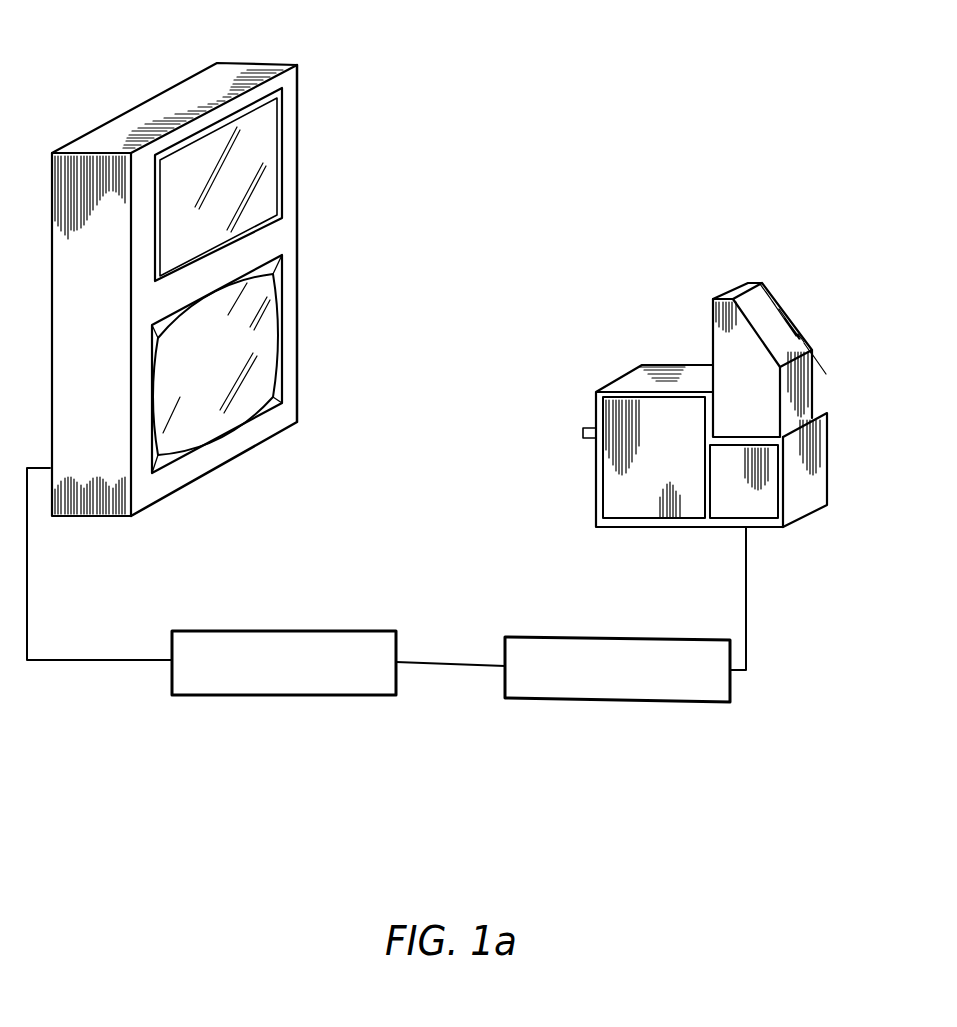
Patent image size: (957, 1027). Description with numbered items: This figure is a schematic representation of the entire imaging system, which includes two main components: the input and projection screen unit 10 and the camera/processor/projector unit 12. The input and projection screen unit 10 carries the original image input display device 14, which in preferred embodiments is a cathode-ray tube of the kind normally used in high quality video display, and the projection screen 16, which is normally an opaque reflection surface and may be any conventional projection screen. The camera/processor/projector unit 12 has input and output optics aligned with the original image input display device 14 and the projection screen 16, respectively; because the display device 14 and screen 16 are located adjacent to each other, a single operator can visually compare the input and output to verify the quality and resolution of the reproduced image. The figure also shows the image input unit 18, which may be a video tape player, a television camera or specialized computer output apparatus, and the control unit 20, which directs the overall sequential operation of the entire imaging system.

The input and projection screen unit 10 is at (353, 61).
The camera/processor/projector unit 12 is at (722, 267).
The original image input display device 14 is at (260, 352).
The projection screen 16 is at (260, 183).
The image input unit 18 is at (347, 597).
The control unit 20 is at (549, 703).